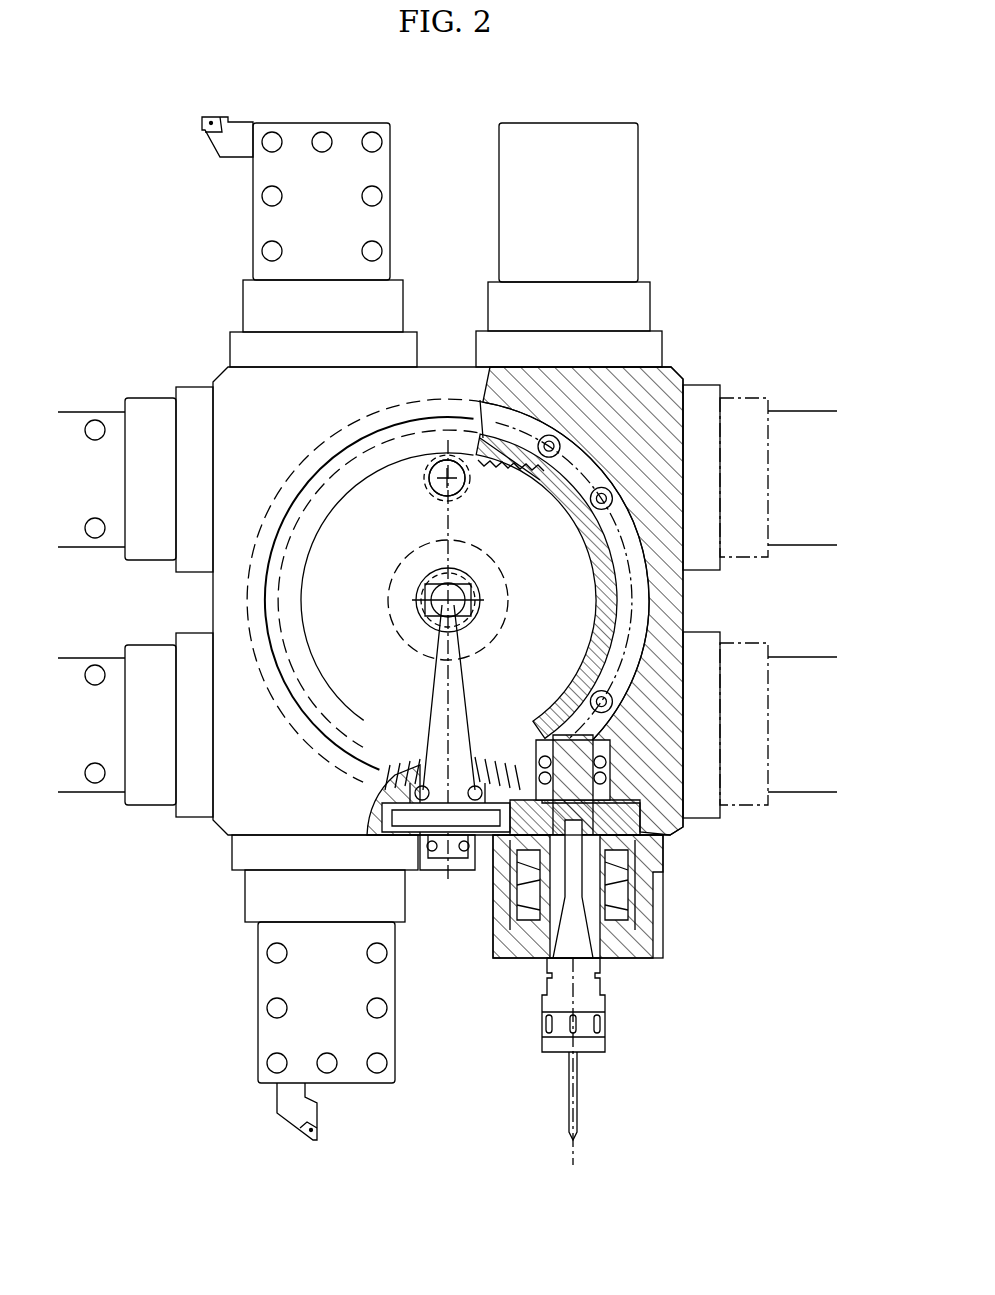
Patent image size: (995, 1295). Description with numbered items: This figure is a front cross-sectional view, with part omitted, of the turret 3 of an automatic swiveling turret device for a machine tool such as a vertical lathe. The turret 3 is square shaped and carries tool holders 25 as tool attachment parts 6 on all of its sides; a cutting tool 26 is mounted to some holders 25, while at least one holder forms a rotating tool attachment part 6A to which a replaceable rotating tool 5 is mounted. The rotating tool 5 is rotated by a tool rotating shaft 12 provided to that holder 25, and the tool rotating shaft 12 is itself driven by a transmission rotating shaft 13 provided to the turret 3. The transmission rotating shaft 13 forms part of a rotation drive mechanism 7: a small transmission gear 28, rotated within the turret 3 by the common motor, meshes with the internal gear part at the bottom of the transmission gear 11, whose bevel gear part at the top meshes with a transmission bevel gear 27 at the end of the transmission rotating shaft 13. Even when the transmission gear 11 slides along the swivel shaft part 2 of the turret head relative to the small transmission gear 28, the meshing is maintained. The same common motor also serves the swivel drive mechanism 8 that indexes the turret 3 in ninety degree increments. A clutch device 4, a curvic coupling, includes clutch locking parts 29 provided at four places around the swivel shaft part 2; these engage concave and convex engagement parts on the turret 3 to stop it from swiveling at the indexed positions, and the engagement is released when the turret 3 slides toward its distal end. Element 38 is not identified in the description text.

The swivel shaft part 2 is at (505, 628).
The turret 3 is at (663, 392).
The clutch device 4 is at (638, 636).
The rotating tool 5 is at (580, 1125).
The tool attachment parts 6 is at (245, 218).
The rotating tool attachment part 6A is at (676, 900).
The rotation drive mechanism 7 is at (470, 915).
The swivel drive mechanism 8 is at (418, 494).
The transmission gear 11 is at (513, 478).
The tool rotating shaft 12 is at (600, 950).
The transmission rotating shaft 13 is at (445, 820).
The holder 25 is at (385, 222).
The cutting tool 26 is at (205, 116).
The transmission bevel gear 27 is at (487, 760).
The small transmission gear 28 is at (468, 494).
The clutch locking parts 29 is at (640, 605).
The turret disc 38 is at (350, 683).